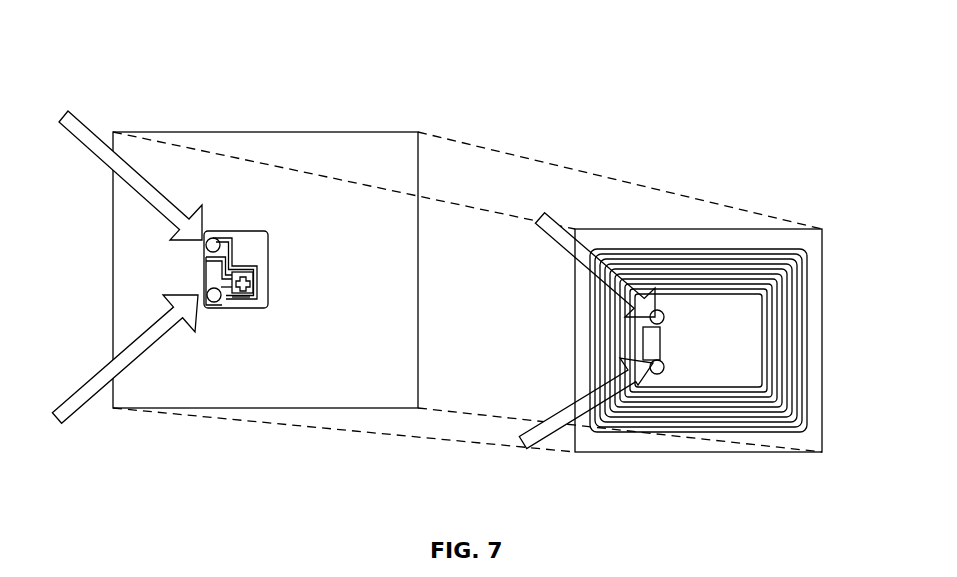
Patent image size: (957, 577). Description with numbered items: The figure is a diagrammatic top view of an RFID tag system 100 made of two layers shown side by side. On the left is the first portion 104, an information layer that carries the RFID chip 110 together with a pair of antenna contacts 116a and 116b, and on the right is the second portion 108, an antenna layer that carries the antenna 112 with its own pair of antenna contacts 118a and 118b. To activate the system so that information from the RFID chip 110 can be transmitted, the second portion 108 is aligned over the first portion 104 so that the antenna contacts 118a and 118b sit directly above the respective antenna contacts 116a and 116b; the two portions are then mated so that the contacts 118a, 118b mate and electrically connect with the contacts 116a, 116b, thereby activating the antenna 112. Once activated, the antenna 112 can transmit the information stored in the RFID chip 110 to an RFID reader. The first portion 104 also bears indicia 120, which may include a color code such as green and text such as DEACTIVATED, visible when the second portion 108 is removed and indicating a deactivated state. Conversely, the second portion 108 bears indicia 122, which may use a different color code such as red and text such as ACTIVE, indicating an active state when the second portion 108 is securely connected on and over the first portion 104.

The RFID tag system 100 is at (343, 55).
The first portion 104 is at (355, 131).
The second portion 108 is at (725, 330).
The RFID chip 110 is at (231, 278).
The antenna 112 is at (790, 308).
The antenna contact 116a is at (213, 240).
The antenna contact 116b is at (213, 305).
The antenna contact 118a is at (657, 311).
The antenna contact 118b is at (657, 373).
The indicia 120 is at (417, 277).
The indicia 122 is at (732, 317).